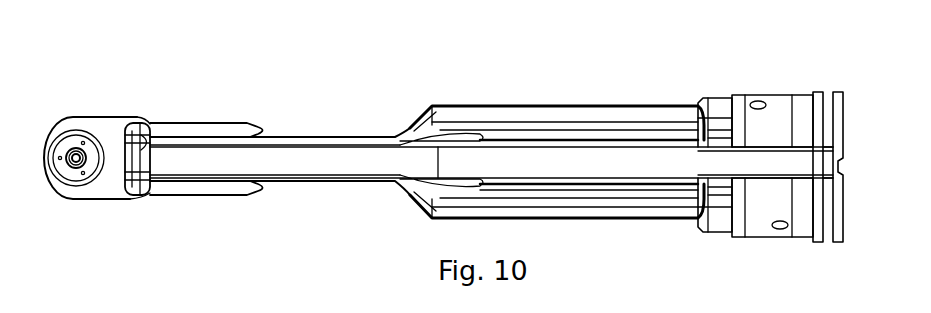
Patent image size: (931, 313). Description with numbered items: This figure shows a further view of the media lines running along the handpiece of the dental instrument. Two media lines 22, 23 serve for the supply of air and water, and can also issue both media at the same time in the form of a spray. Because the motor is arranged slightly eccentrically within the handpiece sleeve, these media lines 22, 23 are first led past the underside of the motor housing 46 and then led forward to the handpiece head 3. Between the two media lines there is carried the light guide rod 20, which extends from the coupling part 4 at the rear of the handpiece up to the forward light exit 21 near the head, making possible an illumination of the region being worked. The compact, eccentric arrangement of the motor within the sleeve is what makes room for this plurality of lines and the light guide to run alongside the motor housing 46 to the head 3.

The handpiece head 3 is at (100, 207).
The forward light exit 21 is at (156, 123).
The media line 22 is at (298, 137).
The media line 23 is at (290, 180).
The light guide rod 20 is at (457, 157).
The motor housing 46 is at (563, 105).
The coupling part 4 is at (773, 100).